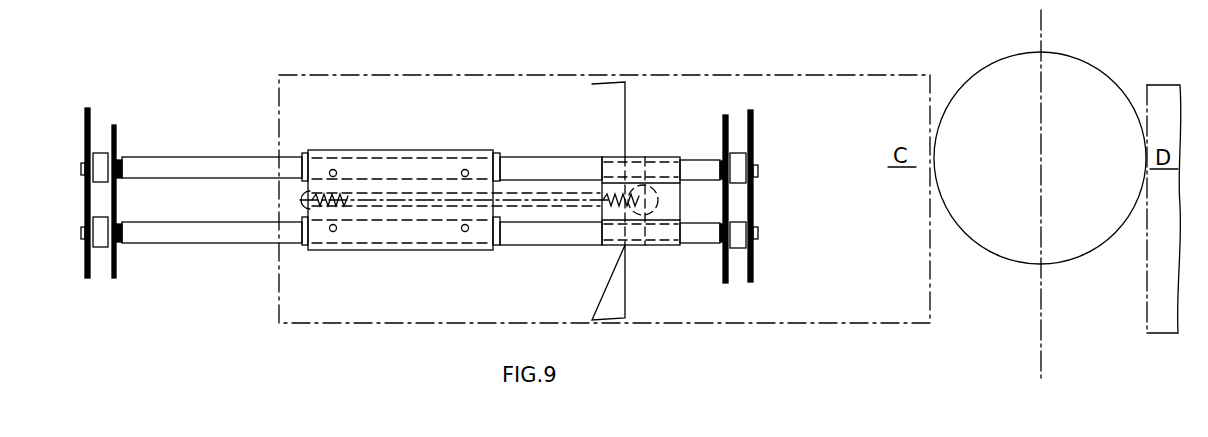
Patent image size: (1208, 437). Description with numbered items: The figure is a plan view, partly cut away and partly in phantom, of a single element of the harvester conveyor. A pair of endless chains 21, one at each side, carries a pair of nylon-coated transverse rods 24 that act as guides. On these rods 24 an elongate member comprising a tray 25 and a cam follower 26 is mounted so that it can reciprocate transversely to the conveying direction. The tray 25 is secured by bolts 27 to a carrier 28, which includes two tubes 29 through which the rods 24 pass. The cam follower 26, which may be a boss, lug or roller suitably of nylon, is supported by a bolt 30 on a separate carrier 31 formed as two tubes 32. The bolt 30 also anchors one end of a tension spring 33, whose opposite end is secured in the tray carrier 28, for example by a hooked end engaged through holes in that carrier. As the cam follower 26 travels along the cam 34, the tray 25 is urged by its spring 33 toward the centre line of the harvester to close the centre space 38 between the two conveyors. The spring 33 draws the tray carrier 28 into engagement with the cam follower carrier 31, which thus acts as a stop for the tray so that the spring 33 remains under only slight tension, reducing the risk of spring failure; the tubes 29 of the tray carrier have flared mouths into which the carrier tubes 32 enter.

The endless chains 21 is at (98, 143).
The transverse rods 24 is at (157, 170).
The tray 25 is at (488, 93).
The cam follower 26 is at (645, 165).
The bolts 27 is at (335, 170).
The carrier 28 is at (308, 248).
The tubes 29 is at (500, 163).
The bolt 30 is at (643, 212).
The carrier 31 is at (672, 168).
The tubes 32 is at (608, 237).
The tension spring 33 is at (417, 195).
The cam 34 is at (622, 300).
The centre space 38 is at (1073, 357).